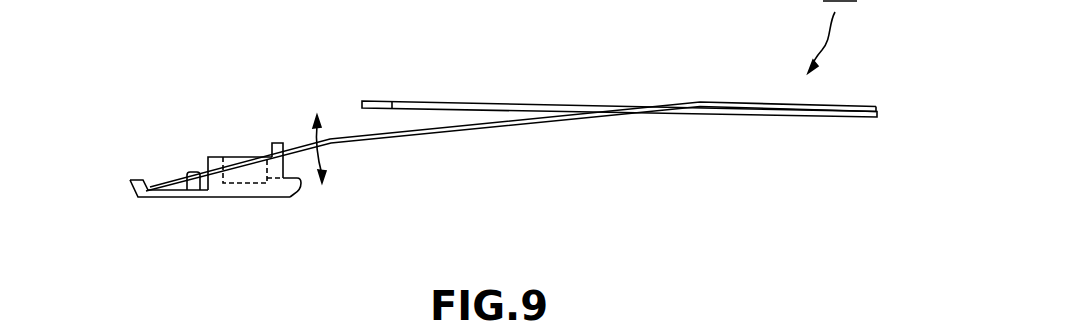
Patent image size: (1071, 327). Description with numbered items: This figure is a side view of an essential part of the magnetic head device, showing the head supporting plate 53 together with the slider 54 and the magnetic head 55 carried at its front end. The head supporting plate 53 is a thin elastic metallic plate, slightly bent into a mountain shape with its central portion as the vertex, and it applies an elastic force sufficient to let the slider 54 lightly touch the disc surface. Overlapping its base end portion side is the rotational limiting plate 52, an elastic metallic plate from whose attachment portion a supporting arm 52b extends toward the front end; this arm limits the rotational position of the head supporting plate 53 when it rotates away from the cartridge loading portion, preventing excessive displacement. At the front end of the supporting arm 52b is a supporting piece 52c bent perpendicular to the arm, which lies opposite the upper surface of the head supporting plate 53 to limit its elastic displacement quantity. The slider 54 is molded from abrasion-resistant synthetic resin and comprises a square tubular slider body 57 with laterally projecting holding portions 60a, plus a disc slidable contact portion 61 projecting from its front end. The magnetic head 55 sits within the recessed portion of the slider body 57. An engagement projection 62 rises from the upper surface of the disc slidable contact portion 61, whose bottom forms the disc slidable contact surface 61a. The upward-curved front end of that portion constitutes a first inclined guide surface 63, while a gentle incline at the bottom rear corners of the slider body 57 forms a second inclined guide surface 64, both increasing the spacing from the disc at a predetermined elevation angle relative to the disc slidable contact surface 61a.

The rotational limiting plate 52 is at (505, 104).
The supporting arm 52b is at (548, 105).
The supporting piece 52c is at (378, 102).
The head supporting plate 53 is at (347, 137).
The slider 54 is at (245, 178).
The magnetic head 55 is at (275, 187).
The slider body 57 is at (217, 156).
The holding portion 60a is at (277, 143).
The disc slidable contact portion 61 is at (150, 187).
The disc slidable contact surface 61a is at (182, 198).
The engagement projection 62 is at (187, 174).
The first inclined guide surface 63 is at (135, 198).
The second inclined guide surface 64 is at (300, 184).